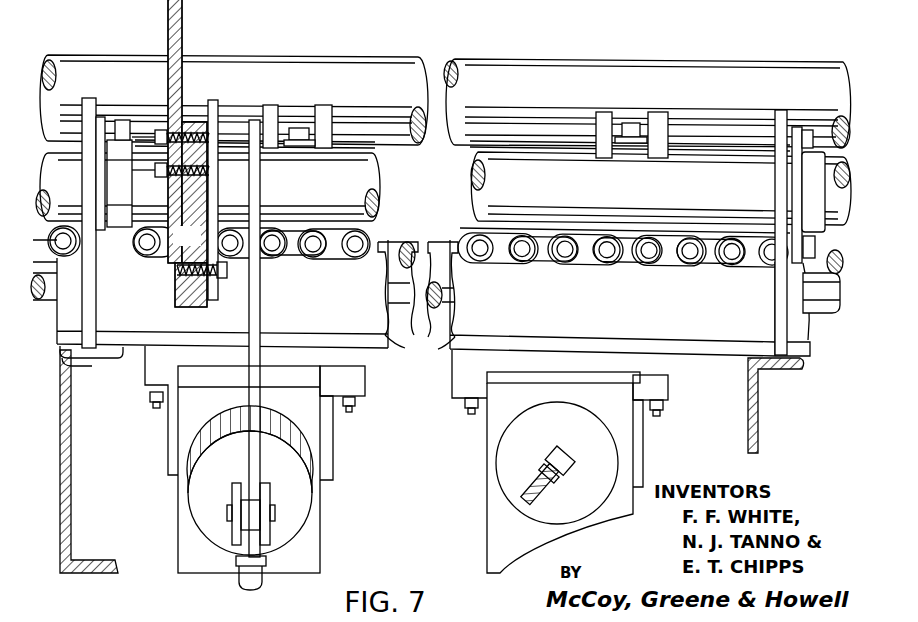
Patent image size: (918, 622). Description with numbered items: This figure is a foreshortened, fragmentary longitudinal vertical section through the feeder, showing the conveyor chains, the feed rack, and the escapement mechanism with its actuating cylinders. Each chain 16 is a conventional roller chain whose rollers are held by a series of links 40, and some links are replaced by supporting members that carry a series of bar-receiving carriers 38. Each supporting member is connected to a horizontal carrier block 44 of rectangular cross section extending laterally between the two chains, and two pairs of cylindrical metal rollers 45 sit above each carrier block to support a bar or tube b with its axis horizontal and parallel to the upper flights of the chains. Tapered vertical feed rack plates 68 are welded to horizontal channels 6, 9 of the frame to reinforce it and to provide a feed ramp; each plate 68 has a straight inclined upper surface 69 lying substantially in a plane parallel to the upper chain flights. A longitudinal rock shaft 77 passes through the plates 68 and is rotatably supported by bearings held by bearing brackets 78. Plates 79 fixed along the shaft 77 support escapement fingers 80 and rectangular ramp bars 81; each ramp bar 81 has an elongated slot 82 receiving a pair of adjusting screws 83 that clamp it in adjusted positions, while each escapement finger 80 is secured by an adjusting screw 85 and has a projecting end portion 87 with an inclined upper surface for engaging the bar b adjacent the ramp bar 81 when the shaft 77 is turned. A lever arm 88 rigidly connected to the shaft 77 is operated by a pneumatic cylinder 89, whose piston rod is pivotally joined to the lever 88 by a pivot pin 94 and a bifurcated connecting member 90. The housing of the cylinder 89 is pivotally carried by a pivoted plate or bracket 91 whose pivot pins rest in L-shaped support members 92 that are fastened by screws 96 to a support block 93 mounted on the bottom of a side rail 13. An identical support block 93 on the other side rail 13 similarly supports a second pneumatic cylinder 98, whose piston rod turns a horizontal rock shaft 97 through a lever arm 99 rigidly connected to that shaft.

The bar or tube b is at (348, 57).
The bar-receiving carrier 38 is at (678, 112).
The rock shaft 77 is at (498, 182).
The cylindrical metal rollers 45 is at (322, 106).
The links 40 is at (540, 264).
The carrier block 44 is at (628, 228).
The side rail 13 is at (388, 357).
The chain 16 is at (457, 233).
The rock shaft 97 is at (420, 343).
The inclined upper surface 69 is at (95, 98).
The feed rack plate 68 is at (96, 170).
The bearing bracket 78 is at (122, 187).
The ramp bar 81 is at (184, 4).
The escapement finger 80 is at (210, 200).
The elongated slot 82 is at (187, 237).
The plate 79 is at (176, 296).
The projecting end portion 87 is at (218, 108).
The adjusting screws 83 is at (165, 133).
The adjusting screw 85 is at (218, 290).
The lever arm 88 is at (262, 182).
The horizontal channel 9 is at (71, 458).
The horizontal channel 6 is at (760, 423).
The pivoted plate or bracket 91 is at (178, 530).
The L-shaped support member 92 is at (168, 432).
The support block 93 is at (372, 385).
The screws 96 is at (150, 400).
The pneumatic cylinder 89 is at (305, 498).
The pivot pin 94 is at (232, 510).
The bifurcated connecting member 90 is at (266, 545).
The second pneumatic cylinder 98 is at (597, 498).
The lever arm 99 is at (572, 377).